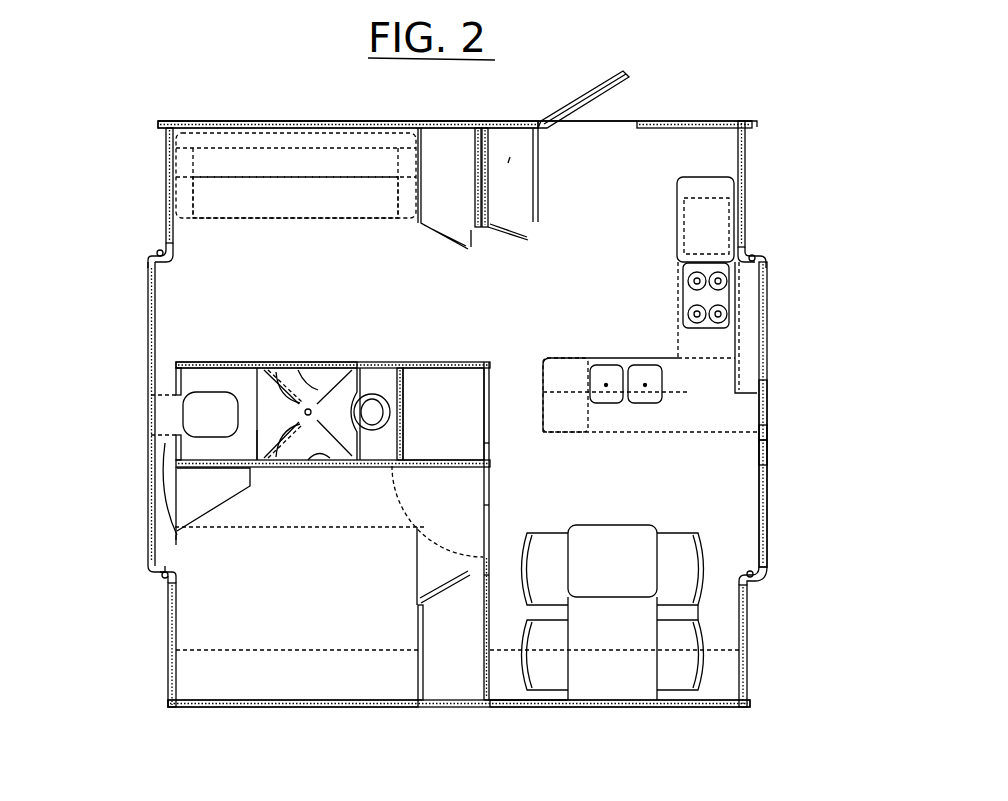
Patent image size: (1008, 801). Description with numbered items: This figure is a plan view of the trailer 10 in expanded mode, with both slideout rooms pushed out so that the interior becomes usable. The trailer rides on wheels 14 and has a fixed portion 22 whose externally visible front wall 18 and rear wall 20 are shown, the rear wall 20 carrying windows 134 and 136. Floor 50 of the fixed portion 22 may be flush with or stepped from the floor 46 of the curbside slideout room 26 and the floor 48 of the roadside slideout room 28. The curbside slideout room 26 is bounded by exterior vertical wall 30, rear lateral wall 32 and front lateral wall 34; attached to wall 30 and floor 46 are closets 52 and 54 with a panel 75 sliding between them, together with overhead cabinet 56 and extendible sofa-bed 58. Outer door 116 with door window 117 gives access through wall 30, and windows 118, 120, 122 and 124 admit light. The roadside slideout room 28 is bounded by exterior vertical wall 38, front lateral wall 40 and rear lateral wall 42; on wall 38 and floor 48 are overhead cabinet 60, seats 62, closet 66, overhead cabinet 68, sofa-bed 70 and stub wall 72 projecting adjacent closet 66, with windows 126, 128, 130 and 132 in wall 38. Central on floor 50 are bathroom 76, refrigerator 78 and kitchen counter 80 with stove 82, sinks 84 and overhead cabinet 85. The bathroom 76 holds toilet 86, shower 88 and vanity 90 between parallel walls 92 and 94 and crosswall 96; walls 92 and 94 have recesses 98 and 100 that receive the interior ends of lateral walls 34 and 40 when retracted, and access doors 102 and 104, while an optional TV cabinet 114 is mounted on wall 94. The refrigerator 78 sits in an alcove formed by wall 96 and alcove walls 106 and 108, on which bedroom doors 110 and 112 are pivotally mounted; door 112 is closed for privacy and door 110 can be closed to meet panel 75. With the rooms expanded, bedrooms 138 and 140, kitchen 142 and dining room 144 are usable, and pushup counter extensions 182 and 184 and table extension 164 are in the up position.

The trailer 10 is at (770, 156).
The wheels 14 is at (489, 575).
The front wall 18 is at (150, 458).
The rear wall 20 is at (768, 395).
The fixed portion 22 is at (792, 436).
The curbside slideout room 26 is at (528, 99).
The roadside slideout room 28 is at (478, 716).
The exterior vertical wall 30 is at (455, 121).
The rear lateral wall 32 is at (748, 247).
The front lateral wall 34 is at (165, 245).
The exterior vertical wall 38 is at (420, 708).
The front lateral wall 40 is at (163, 589).
The rear lateral wall 42 is at (758, 586).
The floor 46 is at (645, 194).
The floor 48 is at (732, 618).
The floor 50 is at (522, 417).
The closet 52 is at (463, 183).
The closet 54 is at (525, 192).
The overhead cabinet 56 is at (325, 167).
The sofa-bed 58 is at (347, 211).
The overhead cabinet 60 is at (635, 695).
The seats 62 is at (558, 585).
The closet 66 is at (467, 673).
The overhead cabinet 68 is at (347, 688).
The sofa-bed 70 is at (342, 598).
The wall 72 is at (492, 682).
The panel 75 is at (509, 150).
The bathroom 76 is at (160, 413).
The refrigerator 78 is at (486, 402).
The kitchen counter 80 is at (688, 362).
The stove 82 is at (700, 295).
The sinks 84 is at (640, 377).
The overhead cabinet 85 is at (703, 425).
The toilet 86 is at (228, 431).
The shower 88 is at (348, 428).
The vanity 90 is at (384, 425).
The wall 92 is at (225, 370).
The wall 94 is at (218, 460).
The crosswall 96 is at (401, 394).
The recess 98 is at (161, 378).
The recess 100 is at (176, 538).
The access door 102 is at (305, 364).
The access door 104 is at (312, 468).
The alcove wall 106 is at (489, 367).
The alcove wall 108 is at (489, 444).
The bedroom door 110 is at (440, 360).
The bedroom door 112 is at (563, 494).
The TV cabinet 114 is at (213, 502).
The outer door 116 is at (625, 90).
The door window 117 is at (588, 94).
The window 118 is at (167, 192).
The window 120 is at (300, 121).
The window 122 is at (682, 115).
The window 124 is at (745, 199).
The window 126 is at (748, 648).
The window 128 is at (608, 708).
The window 130 is at (312, 708).
The window 132 is at (168, 644).
The window 134 is at (766, 318).
The window 136 is at (768, 494).
The bedroom 138 is at (430, 524).
The bedroom 140 is at (388, 270).
The kitchen 142 is at (622, 308).
The dining room 144 is at (702, 517).
The table extension 164 is at (640, 579).
The pushup counter extension 182 is at (720, 242).
The pushup counter extension 184 is at (616, 395).